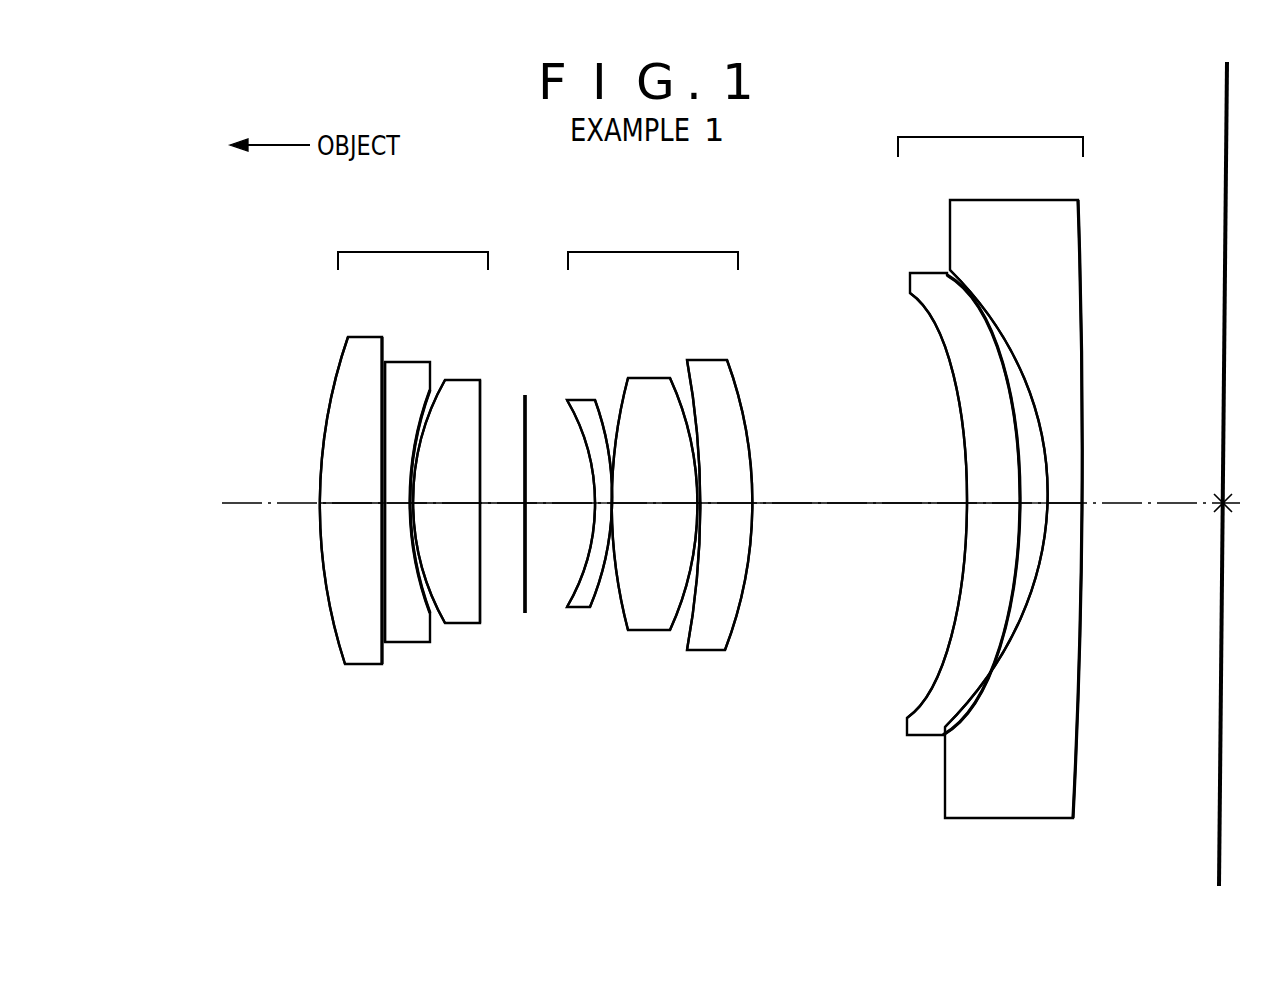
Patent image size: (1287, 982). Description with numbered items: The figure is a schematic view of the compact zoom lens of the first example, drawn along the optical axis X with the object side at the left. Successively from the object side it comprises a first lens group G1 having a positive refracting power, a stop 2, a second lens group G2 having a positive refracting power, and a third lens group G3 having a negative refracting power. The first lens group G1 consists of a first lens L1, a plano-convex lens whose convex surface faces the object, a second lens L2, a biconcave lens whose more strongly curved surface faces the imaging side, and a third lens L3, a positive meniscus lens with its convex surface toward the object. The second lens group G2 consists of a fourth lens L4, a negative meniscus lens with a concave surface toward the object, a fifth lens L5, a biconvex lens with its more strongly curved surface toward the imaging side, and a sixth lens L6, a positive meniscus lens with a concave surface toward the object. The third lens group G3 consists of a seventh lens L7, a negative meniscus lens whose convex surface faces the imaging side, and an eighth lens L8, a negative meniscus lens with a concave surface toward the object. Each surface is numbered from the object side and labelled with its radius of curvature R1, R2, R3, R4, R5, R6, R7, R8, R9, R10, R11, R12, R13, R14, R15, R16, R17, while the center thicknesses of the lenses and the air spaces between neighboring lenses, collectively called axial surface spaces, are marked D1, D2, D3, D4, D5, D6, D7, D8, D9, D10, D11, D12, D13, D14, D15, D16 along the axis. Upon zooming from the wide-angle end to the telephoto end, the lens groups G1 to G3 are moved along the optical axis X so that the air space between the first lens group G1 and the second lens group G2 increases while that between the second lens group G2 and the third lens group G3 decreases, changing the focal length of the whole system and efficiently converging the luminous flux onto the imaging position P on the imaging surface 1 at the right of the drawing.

The imaging surface 1 is at (1225, 157).
The stop 2 is at (524, 396).
The imaging position P is at (1228, 505).
The optical axis X is at (268, 503).
The first lens group G1 is at (413, 249).
The second lens group G2 is at (653, 249).
The third lens group G3 is at (990, 135).
The first lens L1 is at (368, 668).
The second lens L2 is at (412, 648).
The third lens L3 is at (470, 620).
The fourth lens L4 is at (580, 612).
The fifth lens L5 is at (648, 633).
The sixth lens L6 is at (713, 652).
The seventh lens L7 is at (920, 740).
The eighth lens L8 is at (1063, 785).
The radius of curvature of lens surface R1 is at (345, 357).
The radius of curvature of lens surface R2 is at (384, 345).
The radius of curvature of lens surface R3 is at (388, 405).
The radius of curvature of lens surface R4 is at (430, 390).
The radius of curvature of lens surface R5 is at (417, 415).
The radius of curvature of lens surface R6 is at (480, 418).
The radius of curvature of lens surface R7 is at (527, 400).
The radius of curvature of lens surface R8 is at (570, 432).
The radius of curvature of lens surface R9 is at (597, 402).
The radius of curvature of lens surface R10 is at (629, 383).
The radius of curvature of lens surface R11 is at (688, 400).
The radius of curvature of lens surface R12 is at (693, 395).
The radius of curvature of lens surface R13 is at (746, 385).
The radius of curvature of lens surface R14 is at (935, 352).
The radius of curvature of lens surface R15 is at (993, 340).
The radius of curvature of lens surface R16 is at (1018, 375).
The radius of curvature of lens surface R17 is at (1085, 335).
The axial surface space D1 is at (365, 500).
The axial surface space D2 is at (372, 508).
The axial surface space D3 is at (385, 500).
The axial surface space D4 is at (412, 508).
The axial surface space D5 is at (446, 500).
The axial surface space D6 is at (492, 500).
The axial surface space D7 is at (552, 500).
The axial surface space D8 is at (595, 512).
The axial surface space D9 is at (615, 510).
The axial surface space D10 is at (657, 500).
The axial surface space D11 is at (710, 500).
The axial surface space D12 is at (715, 510).
The axial surface space D13 is at (815, 500).
The axial surface space D14 is at (997, 500).
The axial surface space D15 is at (1027, 510).
The axial surface space D16 is at (1070, 510).